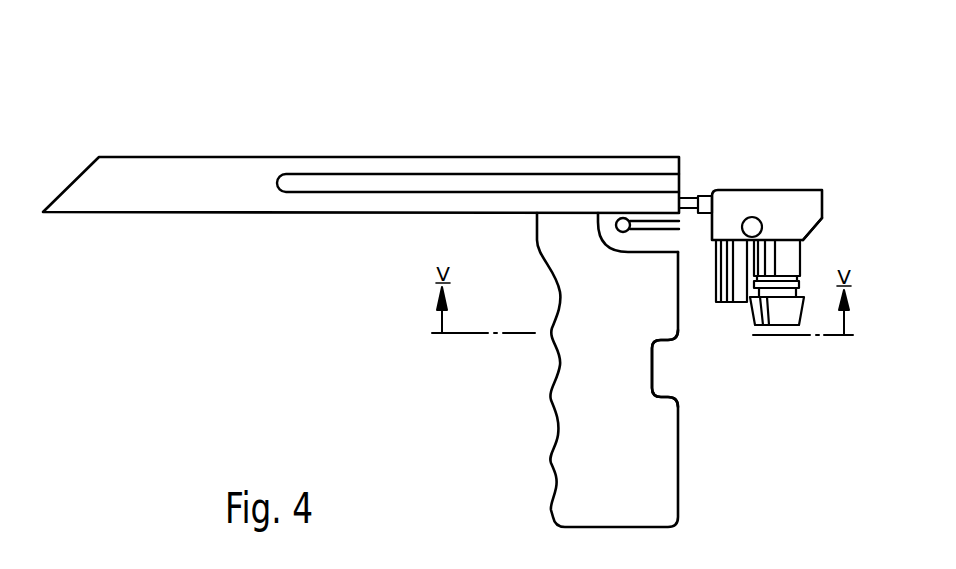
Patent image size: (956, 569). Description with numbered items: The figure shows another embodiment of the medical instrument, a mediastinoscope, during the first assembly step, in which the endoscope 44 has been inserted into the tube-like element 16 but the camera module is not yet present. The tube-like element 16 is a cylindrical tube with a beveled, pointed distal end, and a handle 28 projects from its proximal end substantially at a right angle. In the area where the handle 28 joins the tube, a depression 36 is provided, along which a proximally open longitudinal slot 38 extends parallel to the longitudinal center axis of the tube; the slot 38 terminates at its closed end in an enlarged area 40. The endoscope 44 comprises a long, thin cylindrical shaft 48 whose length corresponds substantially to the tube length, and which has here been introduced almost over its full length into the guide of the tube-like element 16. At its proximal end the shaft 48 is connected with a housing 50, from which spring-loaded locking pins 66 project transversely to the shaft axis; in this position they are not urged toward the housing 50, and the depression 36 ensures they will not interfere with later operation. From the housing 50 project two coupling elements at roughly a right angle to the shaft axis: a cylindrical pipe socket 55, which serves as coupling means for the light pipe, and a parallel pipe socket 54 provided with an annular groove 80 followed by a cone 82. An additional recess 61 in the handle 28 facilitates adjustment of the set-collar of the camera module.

The tube-like element 16 is at (236, 178).
The handle 28 is at (580, 457).
The depression 36 is at (647, 238).
The longitudinal slot 38 is at (650, 223).
The enlarged area 40 is at (617, 228).
The endoscope 44 is at (763, 190).
The shaft 48 is at (693, 200).
The housing 50 is at (790, 208).
The pipe socket 54 is at (793, 252).
The cylindrical pipe socket 55 is at (735, 285).
The recess 61 is at (667, 383).
The locking pins 66 is at (751, 217).
The annular groove 80 is at (798, 287).
The cone 82 is at (797, 313).